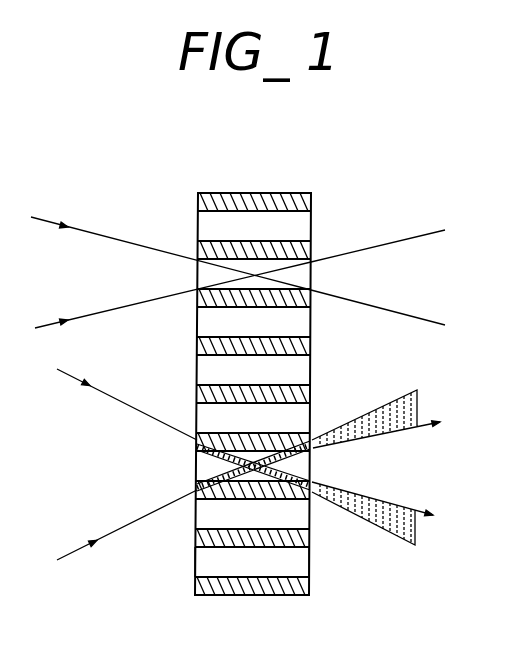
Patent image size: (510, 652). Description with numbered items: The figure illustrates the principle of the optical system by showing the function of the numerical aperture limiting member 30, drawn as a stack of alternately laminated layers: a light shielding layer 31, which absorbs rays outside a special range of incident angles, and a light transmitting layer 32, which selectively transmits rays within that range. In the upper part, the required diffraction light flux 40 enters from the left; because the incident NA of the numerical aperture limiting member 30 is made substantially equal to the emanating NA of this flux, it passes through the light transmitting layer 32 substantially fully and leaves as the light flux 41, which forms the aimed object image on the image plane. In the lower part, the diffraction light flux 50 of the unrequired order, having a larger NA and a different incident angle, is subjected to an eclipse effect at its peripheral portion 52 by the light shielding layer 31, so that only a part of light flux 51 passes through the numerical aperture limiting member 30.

The numerical aperture limiting member 30 is at (259, 378).
The light shielding layer 31 is at (195, 588).
The light transmitting layer 32 is at (195, 556).
The required diffraction light flux 40 is at (108, 290).
The light flux 41 is at (428, 297).
The diffraction light flux of the unrequired order 50 is at (112, 480).
The part of light flux 51 is at (415, 482).
The peripheral portion 52 is at (397, 402).